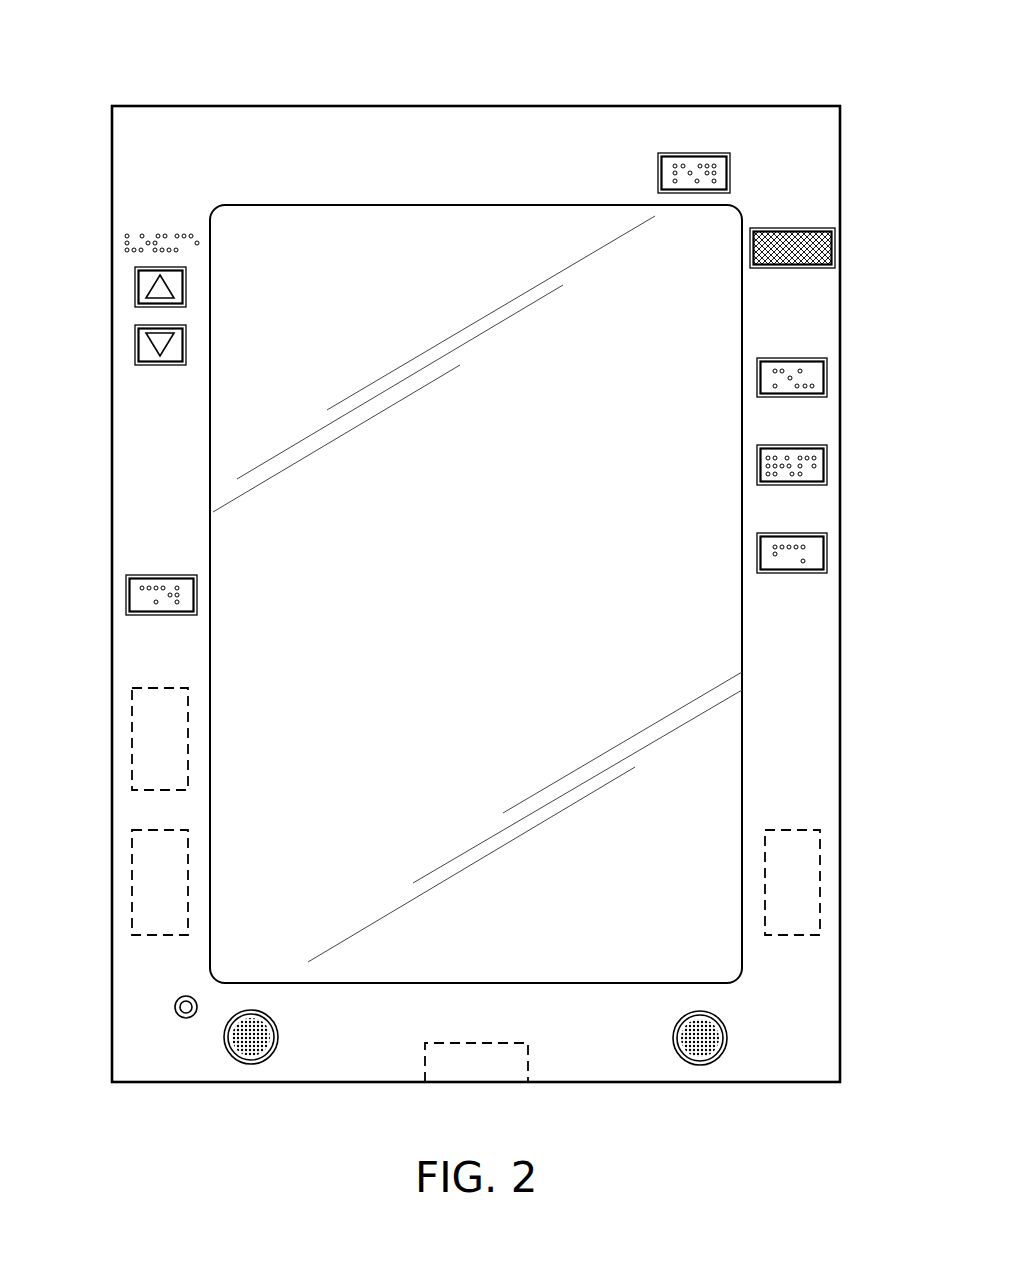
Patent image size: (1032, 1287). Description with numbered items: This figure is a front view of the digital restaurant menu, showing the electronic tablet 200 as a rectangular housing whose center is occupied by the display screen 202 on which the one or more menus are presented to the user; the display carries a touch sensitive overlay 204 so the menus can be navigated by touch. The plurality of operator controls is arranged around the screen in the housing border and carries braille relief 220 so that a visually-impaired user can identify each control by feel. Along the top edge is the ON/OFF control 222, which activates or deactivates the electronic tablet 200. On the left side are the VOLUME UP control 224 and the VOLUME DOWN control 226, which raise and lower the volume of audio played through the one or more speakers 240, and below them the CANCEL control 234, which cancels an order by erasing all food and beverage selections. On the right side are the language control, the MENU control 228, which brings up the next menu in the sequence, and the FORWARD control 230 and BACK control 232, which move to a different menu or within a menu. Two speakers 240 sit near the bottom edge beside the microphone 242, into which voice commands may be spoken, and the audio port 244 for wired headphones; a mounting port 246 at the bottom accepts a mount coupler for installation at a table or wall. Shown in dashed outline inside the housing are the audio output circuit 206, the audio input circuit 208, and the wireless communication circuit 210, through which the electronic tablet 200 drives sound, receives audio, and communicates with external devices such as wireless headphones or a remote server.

The electronic tablet 200 is at (280, 106).
The display screen 202 is at (476, 205).
The touch sensitive overlay 204 is at (690, 752).
The audio output circuit 206 is at (822, 883).
The audio input circuit 208 is at (133, 913).
The wireless communication circuit 210 is at (135, 760).
The braille relief 220 is at (713, 172).
The ON/OFF control 222 is at (660, 153).
The VOLUME UP control 224 is at (137, 290).
The VOLUME DOWN control 226 is at (137, 348).
The MENU control 228 is at (827, 380).
The FORWARD control 230 is at (827, 463).
The BACK control 232 is at (827, 553).
The CANCEL control 234 is at (126, 592).
The speaker 240 is at (253, 1050).
The microphone 242 is at (834, 246).
The audio port 244 is at (187, 1018).
The mounting port 246 is at (528, 1060).